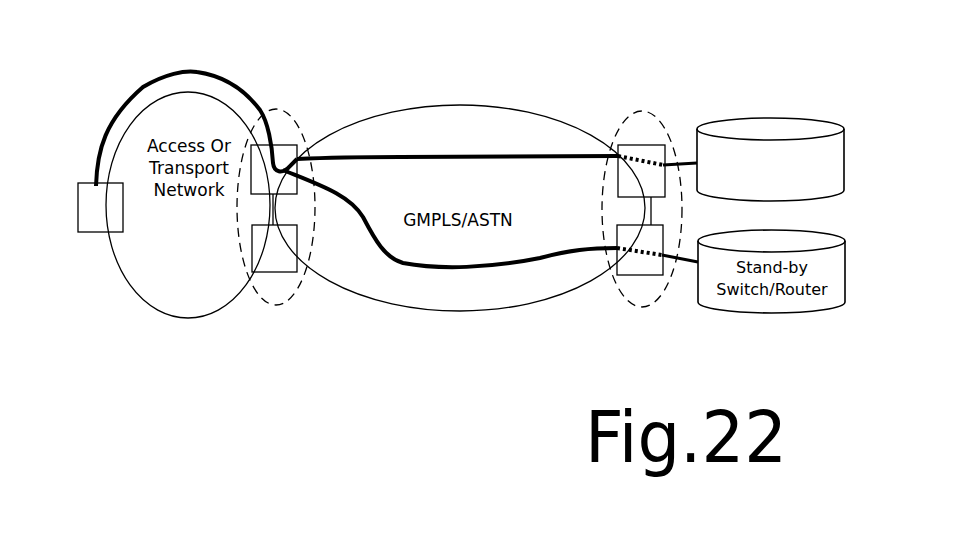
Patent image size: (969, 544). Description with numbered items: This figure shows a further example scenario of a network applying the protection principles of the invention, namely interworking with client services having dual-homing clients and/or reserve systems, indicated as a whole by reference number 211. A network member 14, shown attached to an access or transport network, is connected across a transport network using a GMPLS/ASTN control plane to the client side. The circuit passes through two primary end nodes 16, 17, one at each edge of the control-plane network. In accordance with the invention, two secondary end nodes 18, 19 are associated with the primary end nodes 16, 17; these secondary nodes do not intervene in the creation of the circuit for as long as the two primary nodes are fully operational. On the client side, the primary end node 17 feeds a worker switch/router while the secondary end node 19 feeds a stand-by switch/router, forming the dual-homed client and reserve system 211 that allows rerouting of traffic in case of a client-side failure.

The network member 14 is at (85, 225).
The primary end node 16 is at (284, 152).
The primary end node 17 is at (633, 147).
The secondary end node 18 is at (278, 267).
The secondary end node 19 is at (642, 268).
The dual-homing client and reserve system 211 is at (718, 101).